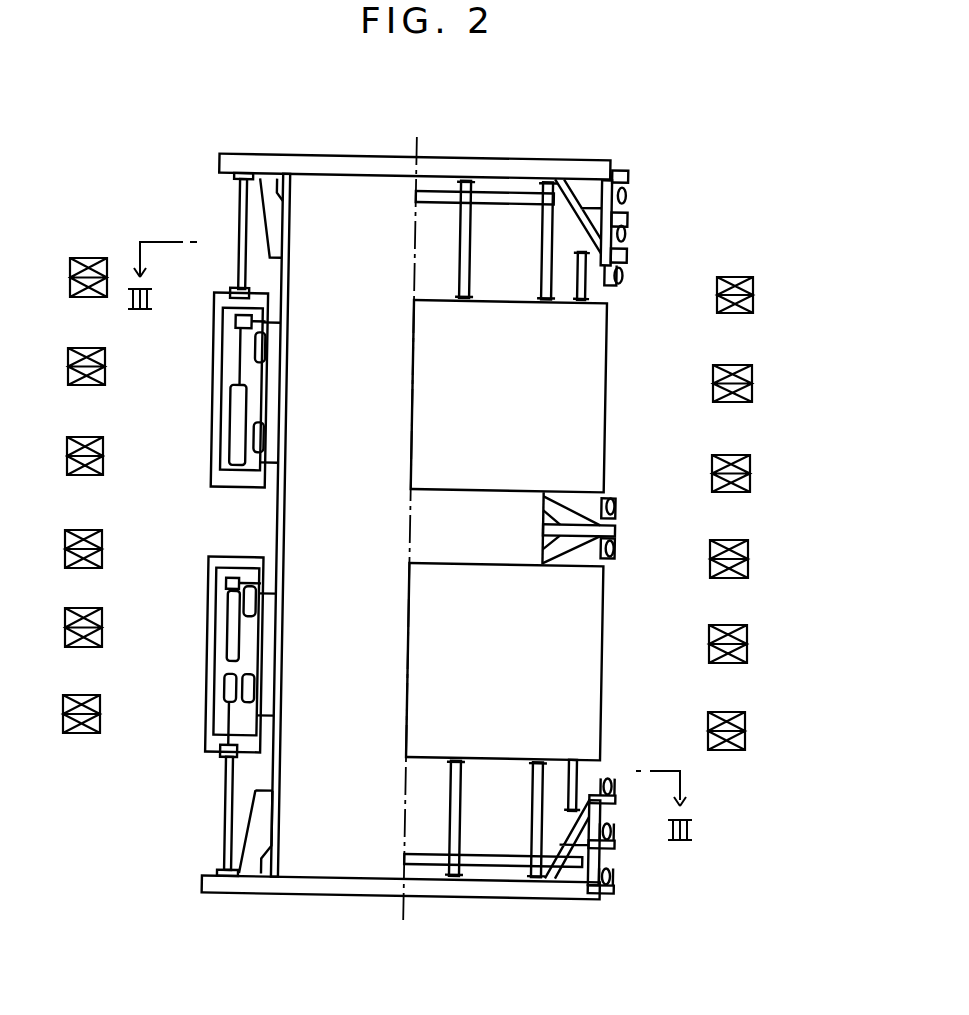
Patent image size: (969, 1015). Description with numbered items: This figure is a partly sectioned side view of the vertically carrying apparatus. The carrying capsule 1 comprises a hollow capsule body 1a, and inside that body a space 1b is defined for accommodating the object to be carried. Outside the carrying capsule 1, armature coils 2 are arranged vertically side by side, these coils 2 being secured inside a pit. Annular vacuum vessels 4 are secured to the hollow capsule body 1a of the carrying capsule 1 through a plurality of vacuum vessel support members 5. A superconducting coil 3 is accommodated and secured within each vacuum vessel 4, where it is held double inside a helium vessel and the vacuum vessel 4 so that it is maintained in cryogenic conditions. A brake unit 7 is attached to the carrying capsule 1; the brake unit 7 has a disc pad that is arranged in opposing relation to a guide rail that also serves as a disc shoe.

The carrying capsule 1 is at (584, 151).
The hollow capsule body 1a is at (289, 273).
The space for accommodating an object to be carried 1b is at (367, 543).
The armature coils 2 is at (745, 737).
The superconducting coil 3 is at (237, 333).
The annular vacuum vessel 4 is at (213, 422).
The vacuum vessel support member 5 is at (238, 199).
The brake unit 7 is at (622, 228).